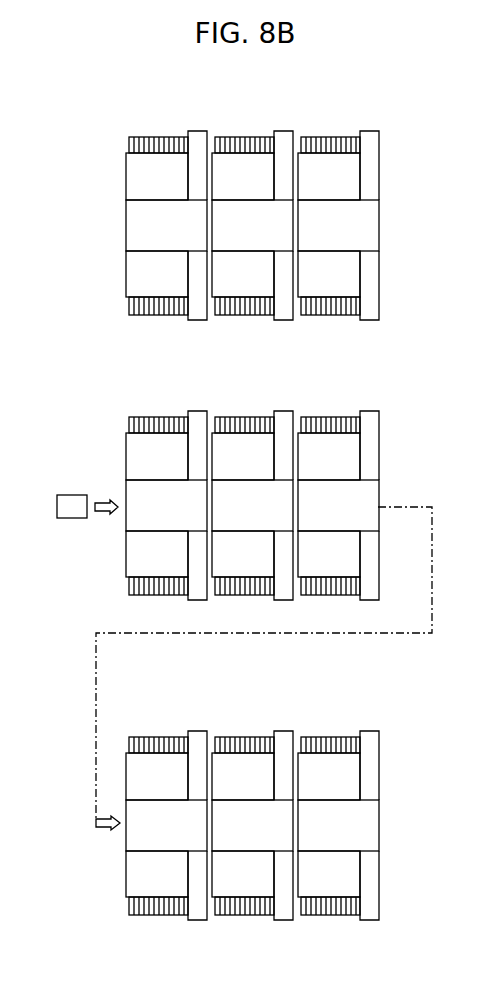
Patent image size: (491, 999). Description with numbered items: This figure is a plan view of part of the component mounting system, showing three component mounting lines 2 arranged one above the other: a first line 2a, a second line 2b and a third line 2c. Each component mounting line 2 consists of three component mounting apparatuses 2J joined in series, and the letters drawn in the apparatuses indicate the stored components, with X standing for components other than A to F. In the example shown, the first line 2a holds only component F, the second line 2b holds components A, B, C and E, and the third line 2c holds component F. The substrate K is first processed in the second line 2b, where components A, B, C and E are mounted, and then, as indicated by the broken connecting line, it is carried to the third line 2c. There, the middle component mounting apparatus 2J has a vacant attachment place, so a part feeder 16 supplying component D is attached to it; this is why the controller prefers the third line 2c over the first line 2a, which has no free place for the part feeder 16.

The component mounting line 2 is at (202, 516).
The first line 2a is at (115, 168).
The second line 2b is at (115, 445).
The third line 2c is at (115, 865).
The component mounting apparatus 2J is at (172, 127).
The part feeder 16 is at (248, 734).
The substrate K is at (73, 502).